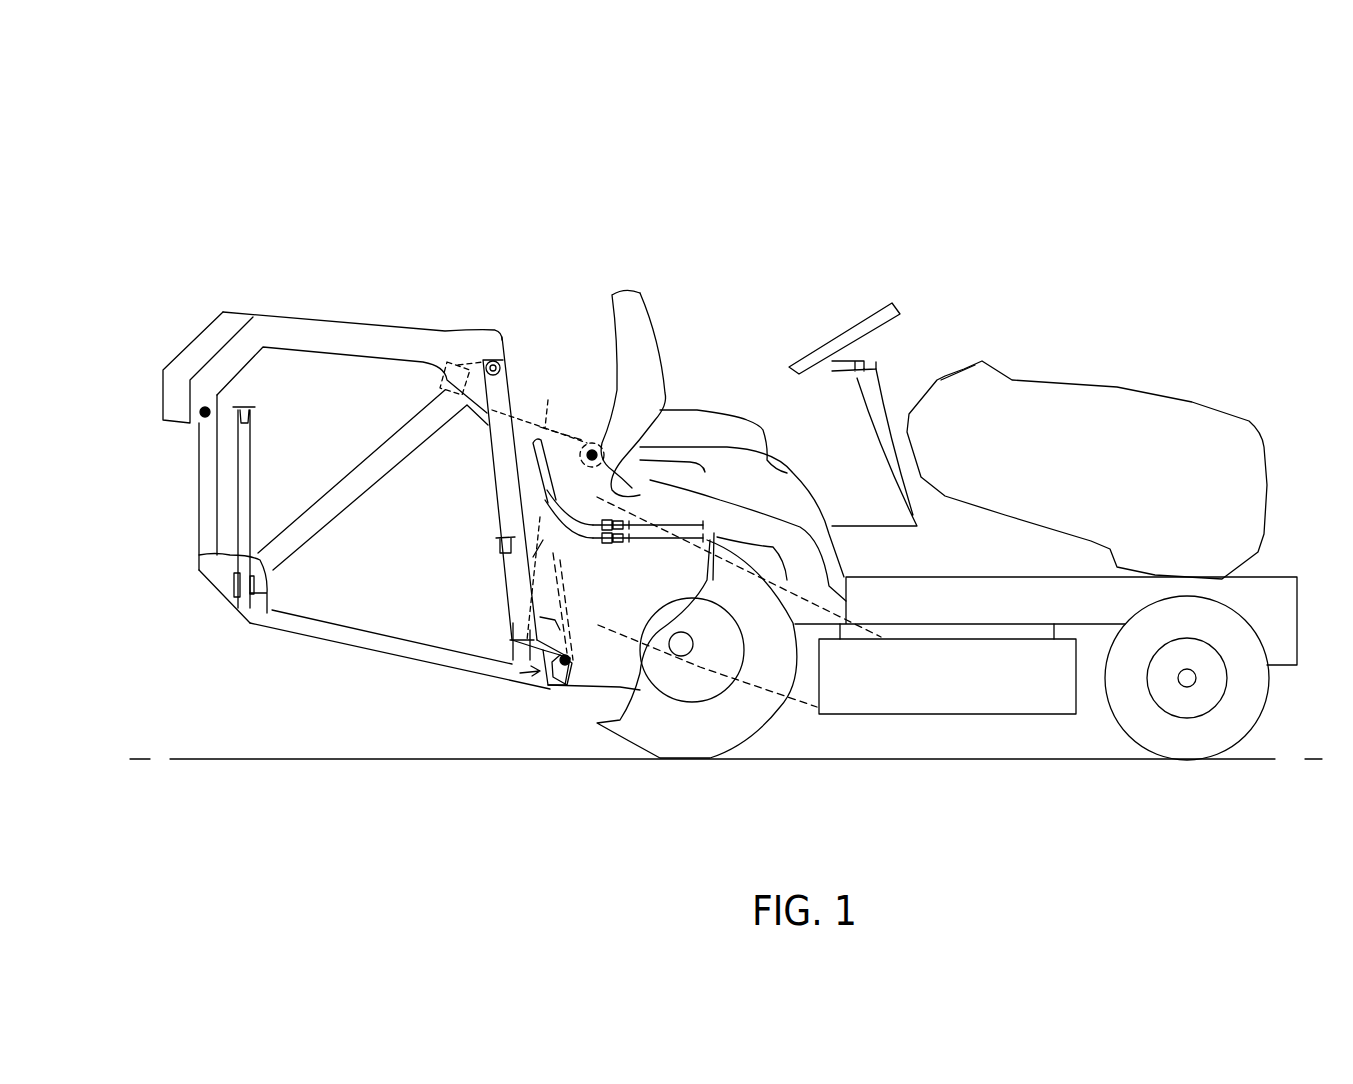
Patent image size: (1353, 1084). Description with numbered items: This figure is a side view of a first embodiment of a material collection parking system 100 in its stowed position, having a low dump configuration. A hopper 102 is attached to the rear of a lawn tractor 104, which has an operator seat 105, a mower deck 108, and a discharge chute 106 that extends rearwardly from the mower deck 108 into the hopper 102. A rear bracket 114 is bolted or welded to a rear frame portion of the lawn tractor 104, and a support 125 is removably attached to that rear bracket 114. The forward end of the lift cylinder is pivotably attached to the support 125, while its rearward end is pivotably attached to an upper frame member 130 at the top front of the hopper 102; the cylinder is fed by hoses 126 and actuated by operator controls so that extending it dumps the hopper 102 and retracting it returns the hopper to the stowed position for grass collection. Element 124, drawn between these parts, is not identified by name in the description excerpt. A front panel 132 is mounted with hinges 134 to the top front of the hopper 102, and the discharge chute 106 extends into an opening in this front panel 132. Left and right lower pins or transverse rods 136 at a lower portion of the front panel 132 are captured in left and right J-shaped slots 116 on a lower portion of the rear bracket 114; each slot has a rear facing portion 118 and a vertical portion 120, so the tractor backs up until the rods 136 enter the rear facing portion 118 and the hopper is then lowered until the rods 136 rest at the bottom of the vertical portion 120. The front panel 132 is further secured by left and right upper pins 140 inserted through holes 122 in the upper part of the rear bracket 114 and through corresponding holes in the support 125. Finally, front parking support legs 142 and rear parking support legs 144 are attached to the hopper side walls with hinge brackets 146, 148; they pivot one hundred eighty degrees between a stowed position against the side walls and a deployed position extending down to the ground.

The material collection parking system 100 is at (405, 168).
The hopper 102 is at (322, 373).
The lawn tractor 104 is at (987, 240).
The operator seat 105 is at (630, 307).
The discharge chute 106 is at (718, 677).
The mower deck 108 is at (922, 678).
The rear bracket 114 is at (667, 487).
The J-shaped slots 116 is at (525, 672).
The rear facing portion 118 is at (508, 622).
The vertical portion 120 is at (516, 635).
The holes 122 is at (620, 392).
The linkage 124 is at (548, 400).
The support 125 is at (590, 443).
The hoses 126 is at (543, 473).
The upper frame member 130 is at (452, 362).
The front panel 132 is at (517, 467).
The hinges 134 is at (485, 355).
The lower pins or transverse rods 136 is at (567, 667).
The upper pins 140 is at (607, 467).
The front parking support legs 142 is at (520, 655).
The rear parking support legs 144 is at (238, 482).
The hinge bracket 146 is at (510, 660).
The hinge bracket 148 is at (270, 592).